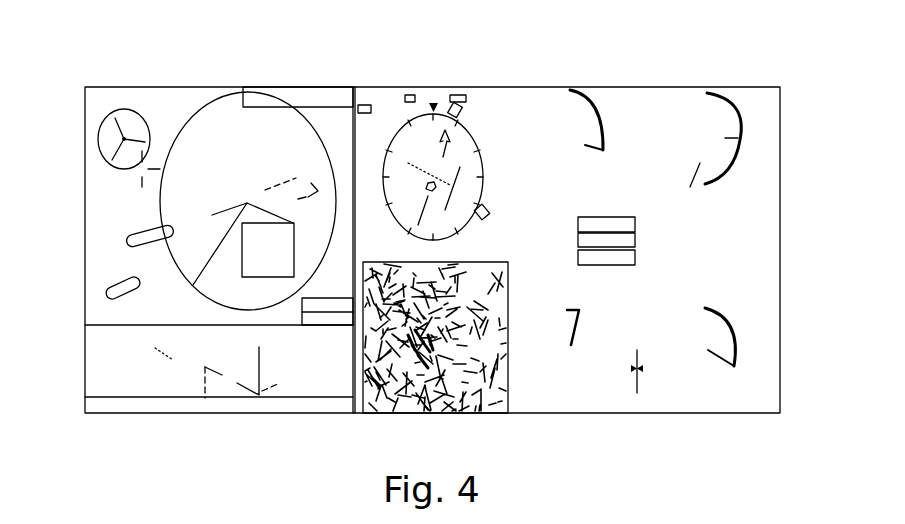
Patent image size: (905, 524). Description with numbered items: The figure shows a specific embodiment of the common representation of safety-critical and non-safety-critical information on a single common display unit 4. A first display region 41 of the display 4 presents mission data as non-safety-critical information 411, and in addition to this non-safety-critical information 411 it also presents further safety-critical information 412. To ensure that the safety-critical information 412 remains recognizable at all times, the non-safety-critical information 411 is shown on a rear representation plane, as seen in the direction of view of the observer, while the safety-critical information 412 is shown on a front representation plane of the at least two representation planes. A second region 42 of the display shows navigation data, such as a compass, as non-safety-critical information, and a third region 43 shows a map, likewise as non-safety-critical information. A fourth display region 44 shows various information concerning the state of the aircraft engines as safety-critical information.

The common display unit 4 is at (84, 60).
The first display region 41 is at (85, 88).
The non-safety-critical information 411 is at (232, 110).
The safety-critical information 412 is at (123, 122).
The second region 42 is at (508, 87).
The third region 43 is at (508, 413).
The fourth display region 44 is at (780, 87).